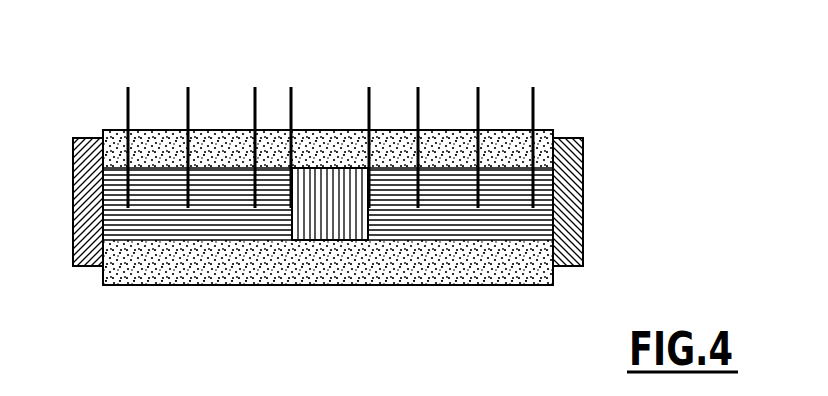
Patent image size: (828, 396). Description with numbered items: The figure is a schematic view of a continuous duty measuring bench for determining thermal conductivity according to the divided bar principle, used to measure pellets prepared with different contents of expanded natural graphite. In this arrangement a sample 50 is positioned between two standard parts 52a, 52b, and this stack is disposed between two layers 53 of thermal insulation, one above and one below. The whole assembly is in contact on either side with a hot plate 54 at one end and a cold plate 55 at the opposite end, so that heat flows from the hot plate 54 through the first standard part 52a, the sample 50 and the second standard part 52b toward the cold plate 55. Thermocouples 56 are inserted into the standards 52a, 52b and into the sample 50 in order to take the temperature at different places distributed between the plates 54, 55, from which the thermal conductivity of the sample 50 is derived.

The sample 50 is at (332, 232).
The standard part 52a is at (187, 235).
The standard part 52b is at (485, 232).
The layer of thermal insulation 53 is at (262, 265).
The hot plate 54 is at (73, 172).
The cold plate 55 is at (583, 172).
The thermocouples 56 is at (537, 73).